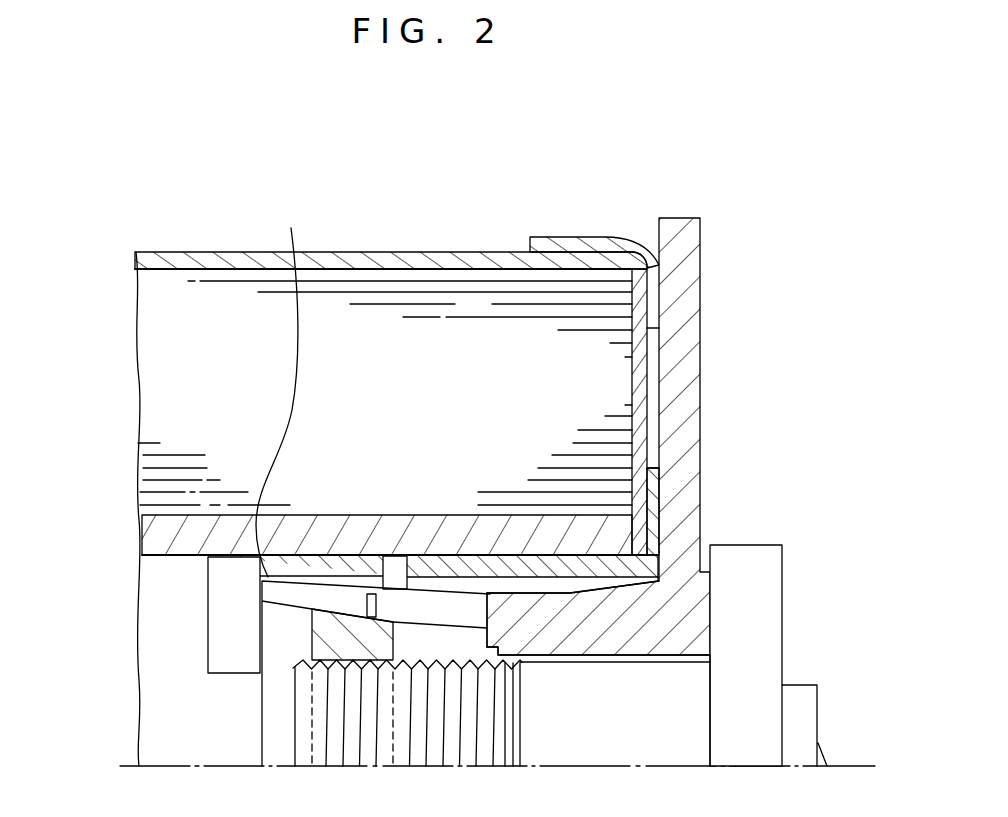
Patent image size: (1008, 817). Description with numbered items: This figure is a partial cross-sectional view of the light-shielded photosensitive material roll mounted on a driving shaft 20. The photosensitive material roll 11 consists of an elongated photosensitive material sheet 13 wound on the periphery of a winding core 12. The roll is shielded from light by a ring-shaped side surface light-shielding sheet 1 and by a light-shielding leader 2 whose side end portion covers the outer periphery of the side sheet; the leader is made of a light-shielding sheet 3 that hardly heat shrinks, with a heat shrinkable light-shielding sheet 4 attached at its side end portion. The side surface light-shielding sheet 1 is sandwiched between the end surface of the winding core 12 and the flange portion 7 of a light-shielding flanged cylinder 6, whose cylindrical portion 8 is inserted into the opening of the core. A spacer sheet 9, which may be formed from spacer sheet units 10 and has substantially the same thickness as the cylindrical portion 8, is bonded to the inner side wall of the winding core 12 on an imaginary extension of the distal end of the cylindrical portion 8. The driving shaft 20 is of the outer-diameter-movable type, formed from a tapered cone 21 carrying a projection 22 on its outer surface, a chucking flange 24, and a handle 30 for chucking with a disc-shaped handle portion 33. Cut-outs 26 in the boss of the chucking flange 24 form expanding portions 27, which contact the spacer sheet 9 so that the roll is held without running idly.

The ring-shaped side surface light-shielding sheet 1 is at (650, 345).
The light-shielding leader 2 is at (361, 344).
The light-shielding sheet 3 is at (478, 252).
The heat shrinkable light-shielding sheet 4 is at (597, 237).
The light-shielding flanged cylinder 6 is at (655, 452).
The flange portion 7 is at (653, 497).
The cylindrical portion 8 is at (640, 568).
The spacer sheet 9 is at (212, 572).
The spacer sheet unit 10 is at (220, 593).
The photosensitive material roll 11 is at (133, 458).
The winding core 12 is at (157, 535).
The photosensitive material sheet 13 is at (158, 380).
The driving shaft 20 is at (685, 517).
The tapered cone 21 is at (310, 641).
The projection 22 is at (378, 604).
The chucking flange 24 is at (580, 662).
The cut-out 26 is at (290, 593).
The expanding portion 27 is at (286, 385).
The handle for chucking 30 is at (782, 570).
The disc-shaped handle portion 33 is at (767, 660).